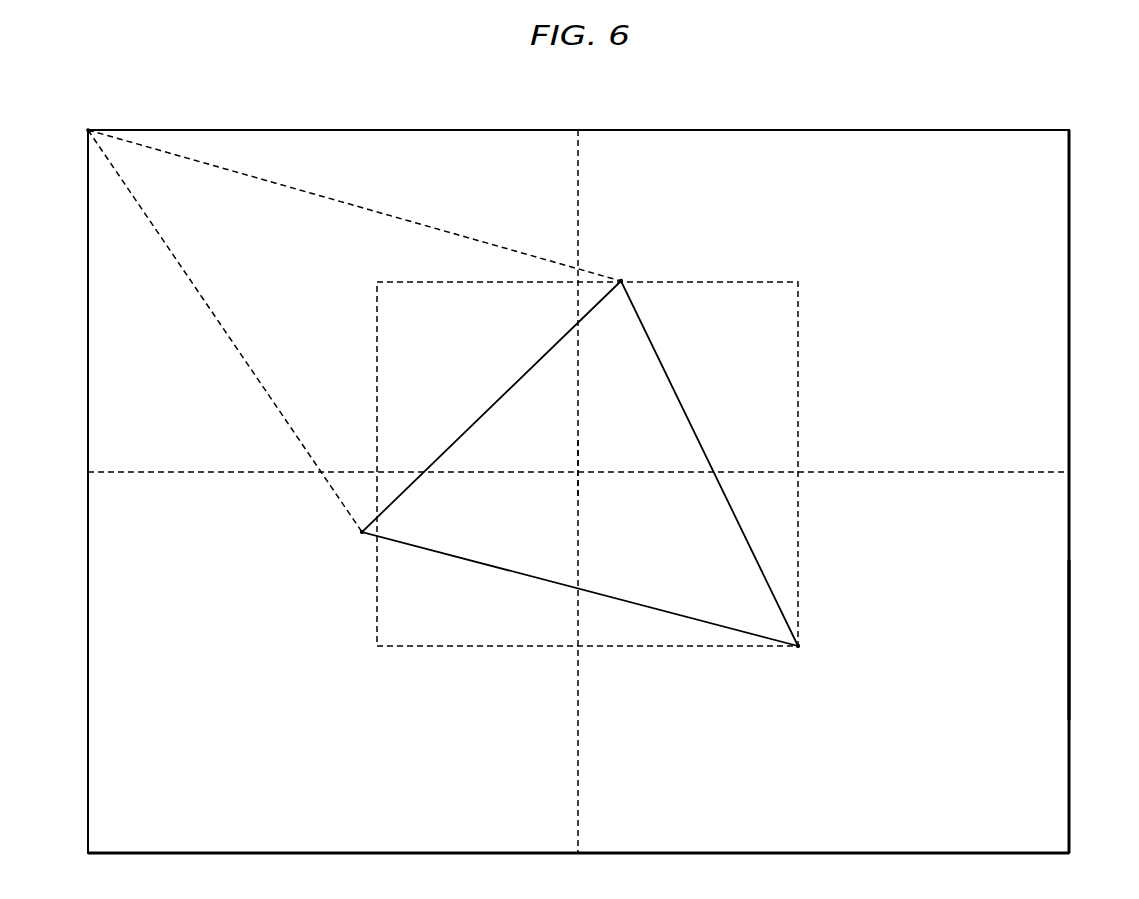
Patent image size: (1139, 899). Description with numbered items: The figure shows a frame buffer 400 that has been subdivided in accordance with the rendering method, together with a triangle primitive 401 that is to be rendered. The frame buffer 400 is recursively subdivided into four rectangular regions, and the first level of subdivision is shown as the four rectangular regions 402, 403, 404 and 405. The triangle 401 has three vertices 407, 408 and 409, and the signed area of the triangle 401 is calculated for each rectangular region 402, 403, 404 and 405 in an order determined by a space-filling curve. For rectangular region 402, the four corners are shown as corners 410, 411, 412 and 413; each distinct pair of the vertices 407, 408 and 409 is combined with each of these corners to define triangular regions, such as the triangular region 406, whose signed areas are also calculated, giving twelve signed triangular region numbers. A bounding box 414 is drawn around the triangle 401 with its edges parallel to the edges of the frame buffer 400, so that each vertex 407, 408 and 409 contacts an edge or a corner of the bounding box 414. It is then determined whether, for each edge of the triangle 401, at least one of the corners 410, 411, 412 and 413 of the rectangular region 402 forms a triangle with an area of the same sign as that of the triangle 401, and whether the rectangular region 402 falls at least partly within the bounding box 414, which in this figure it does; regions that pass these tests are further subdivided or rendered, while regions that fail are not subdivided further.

The frame buffer 400 is at (240, 130).
The triangle primitive 401 is at (655, 390).
The rectangular region 402 is at (393, 146).
The rectangular region 403 is at (816, 146).
The rectangular region 404 is at (1053, 643).
The rectangular region 405 is at (103, 643).
The triangular region 406 is at (206, 275).
The vertex 407 is at (798, 646).
The vertex 408 is at (362, 532).
The vertex 409 is at (621, 281).
The corner 410 is at (88, 130).
The corner 411 is at (578, 130).
The corner 412 is at (578, 472).
The corner 413 is at (88, 472).
The bounding box 414 is at (500, 646).